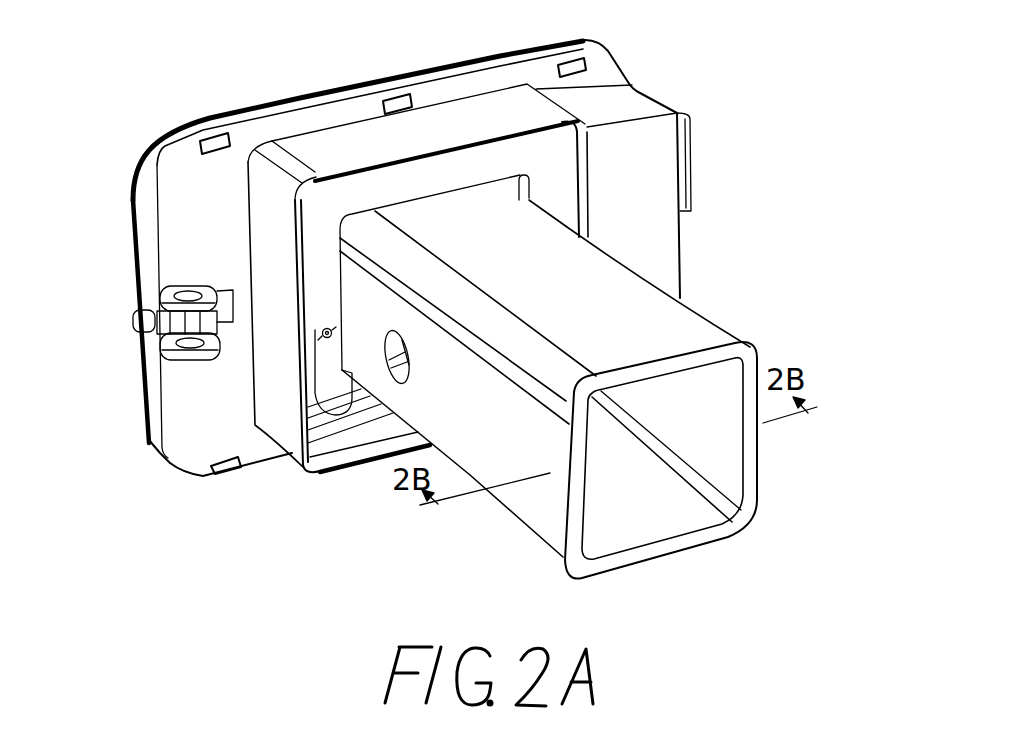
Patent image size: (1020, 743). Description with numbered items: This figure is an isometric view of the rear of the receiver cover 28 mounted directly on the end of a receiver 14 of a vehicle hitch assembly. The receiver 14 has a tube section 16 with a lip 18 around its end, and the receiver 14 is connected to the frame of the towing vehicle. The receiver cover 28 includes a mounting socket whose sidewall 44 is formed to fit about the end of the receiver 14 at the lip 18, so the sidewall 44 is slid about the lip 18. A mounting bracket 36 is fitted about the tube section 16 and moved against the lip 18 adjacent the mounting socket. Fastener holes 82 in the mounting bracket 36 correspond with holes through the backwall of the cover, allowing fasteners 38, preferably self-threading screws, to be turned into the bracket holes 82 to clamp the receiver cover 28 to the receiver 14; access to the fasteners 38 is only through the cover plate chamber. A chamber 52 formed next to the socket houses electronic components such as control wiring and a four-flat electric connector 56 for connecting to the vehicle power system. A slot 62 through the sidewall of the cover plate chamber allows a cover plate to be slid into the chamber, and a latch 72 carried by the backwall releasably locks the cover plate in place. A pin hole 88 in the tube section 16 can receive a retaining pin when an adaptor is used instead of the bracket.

The receiver 14 is at (702, 332).
The tube section 16 is at (554, 307).
The lip 18 is at (333, 473).
The receiver cover 28 is at (302, 99).
The mounting bracket 36 is at (430, 172).
The fasteners 38 is at (307, 363).
The sidewall 44 is at (275, 220).
The chamber 52 is at (644, 99).
The 4-flat electric connector 56 is at (692, 137).
The slot 62 is at (137, 277).
The latch 72 is at (130, 333).
The fastener holes 82 is at (329, 328).
The pin hole 88 is at (397, 380).